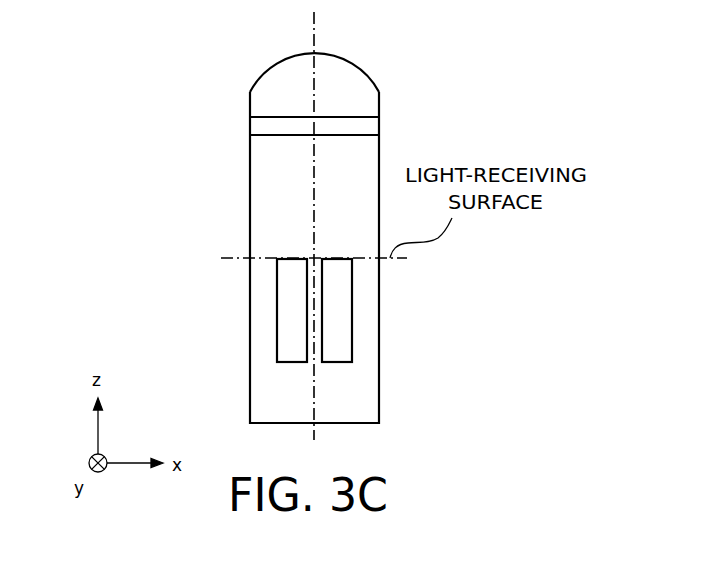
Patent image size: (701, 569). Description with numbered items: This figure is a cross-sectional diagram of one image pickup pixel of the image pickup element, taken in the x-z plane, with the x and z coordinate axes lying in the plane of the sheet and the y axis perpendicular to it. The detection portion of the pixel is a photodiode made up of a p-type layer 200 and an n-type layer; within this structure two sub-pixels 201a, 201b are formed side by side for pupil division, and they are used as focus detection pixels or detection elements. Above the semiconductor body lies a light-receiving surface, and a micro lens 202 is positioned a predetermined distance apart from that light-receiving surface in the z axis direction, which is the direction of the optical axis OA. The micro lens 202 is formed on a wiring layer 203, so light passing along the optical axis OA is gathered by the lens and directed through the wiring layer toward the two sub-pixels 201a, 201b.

The p-type layer 200 is at (250, 381).
The sub-pixel 201a is at (276, 333).
The sub-pixel 201b is at (352, 333).
The micro lens 202 is at (355, 79).
The wiring layer 203 is at (380, 125).
The optical axis OA is at (313, 36).